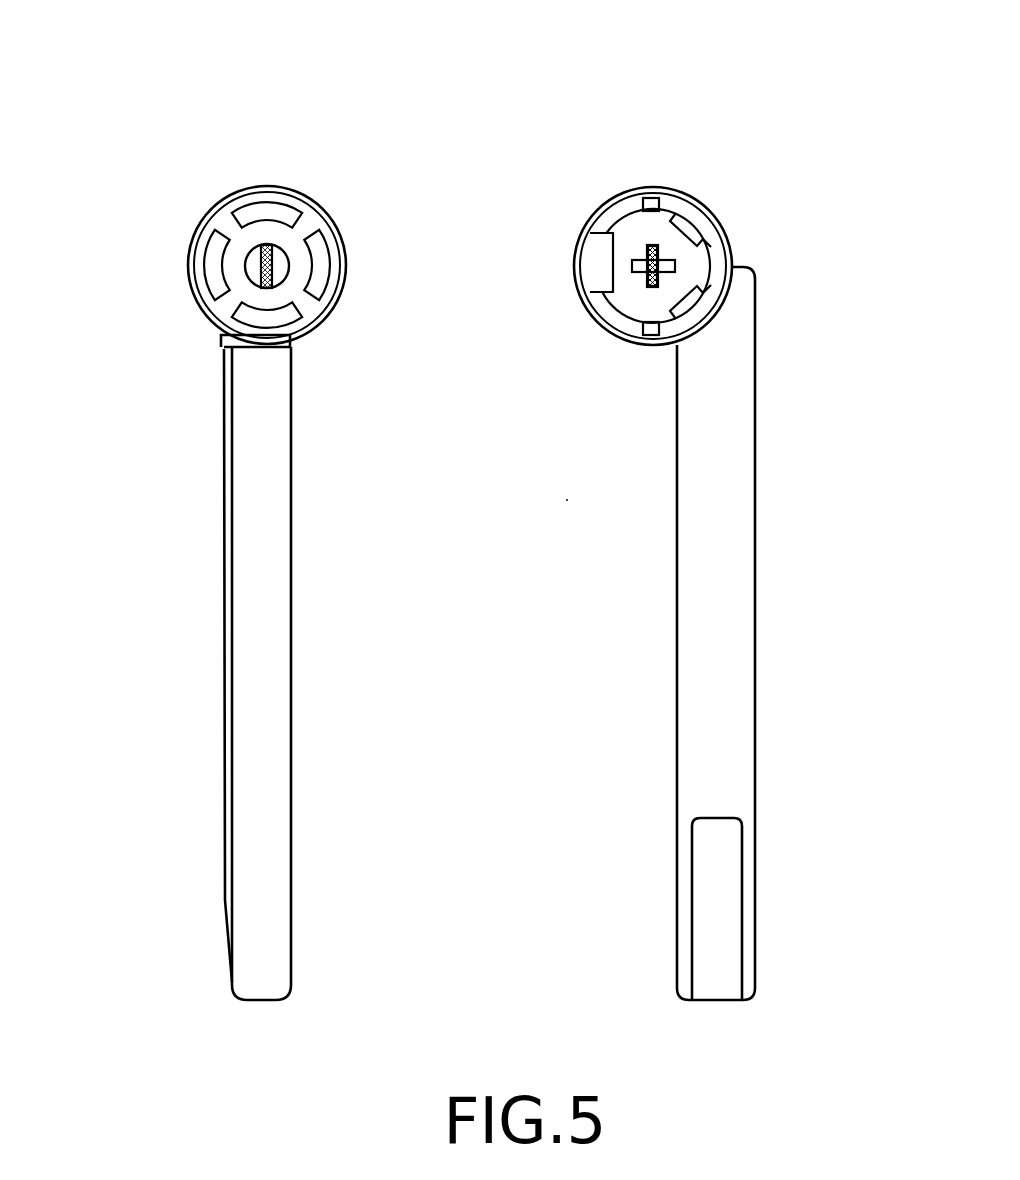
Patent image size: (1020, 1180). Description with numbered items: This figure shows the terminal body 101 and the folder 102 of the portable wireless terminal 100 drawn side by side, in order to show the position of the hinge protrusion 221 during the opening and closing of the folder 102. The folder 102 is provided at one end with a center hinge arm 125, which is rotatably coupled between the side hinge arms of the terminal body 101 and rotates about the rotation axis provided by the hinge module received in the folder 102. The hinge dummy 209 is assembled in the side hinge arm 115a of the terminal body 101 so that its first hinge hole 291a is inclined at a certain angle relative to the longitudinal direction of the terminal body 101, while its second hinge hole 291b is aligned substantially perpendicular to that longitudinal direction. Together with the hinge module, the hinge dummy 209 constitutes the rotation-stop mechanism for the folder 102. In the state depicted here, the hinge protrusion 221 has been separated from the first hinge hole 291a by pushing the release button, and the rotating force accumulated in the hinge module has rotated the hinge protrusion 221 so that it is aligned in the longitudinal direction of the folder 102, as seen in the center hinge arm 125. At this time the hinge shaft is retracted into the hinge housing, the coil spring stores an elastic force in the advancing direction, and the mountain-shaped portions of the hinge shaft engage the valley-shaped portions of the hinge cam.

The portable wireless terminal 100 is at (425, 33).
The terminal body 101 is at (740, 630).
The folder 102 is at (243, 651).
The side hinge arm 115a is at (700, 198).
The center hinge arm 125 is at (197, 228).
The hinge dummy 209 is at (612, 236).
The hinge protrusion 221 is at (261, 267).
The first hinge hole 291a is at (643, 248).
The second hinge hole 291b is at (675, 267).